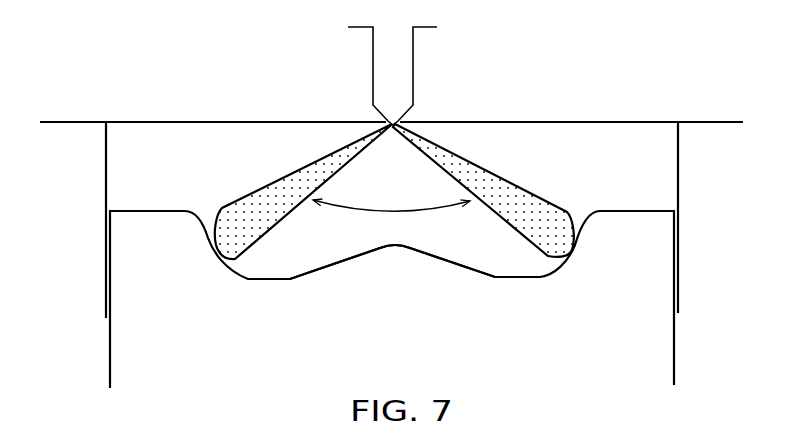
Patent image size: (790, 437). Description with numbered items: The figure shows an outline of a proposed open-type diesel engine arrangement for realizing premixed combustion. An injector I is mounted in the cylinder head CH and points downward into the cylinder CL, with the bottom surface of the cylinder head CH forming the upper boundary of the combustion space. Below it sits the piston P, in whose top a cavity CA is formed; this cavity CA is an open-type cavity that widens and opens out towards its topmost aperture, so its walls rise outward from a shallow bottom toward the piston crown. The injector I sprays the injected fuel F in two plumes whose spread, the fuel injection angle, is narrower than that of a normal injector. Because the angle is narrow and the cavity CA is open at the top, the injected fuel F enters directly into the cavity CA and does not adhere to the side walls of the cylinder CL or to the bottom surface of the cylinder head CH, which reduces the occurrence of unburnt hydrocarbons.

The cylinder head CH is at (292, 80).
The injector I is at (397, 64).
The injected fuel F is at (512, 180).
The cylinder CL is at (678, 155).
The cavity CA is at (328, 264).
The piston P is at (412, 328).